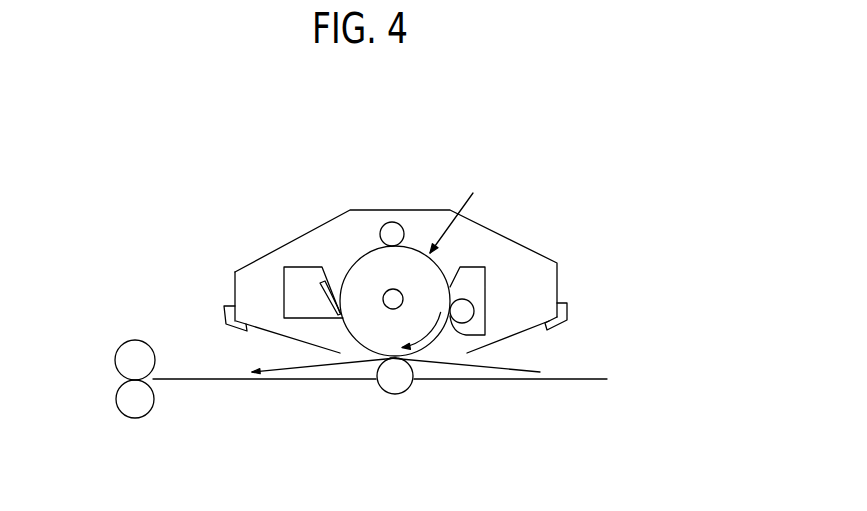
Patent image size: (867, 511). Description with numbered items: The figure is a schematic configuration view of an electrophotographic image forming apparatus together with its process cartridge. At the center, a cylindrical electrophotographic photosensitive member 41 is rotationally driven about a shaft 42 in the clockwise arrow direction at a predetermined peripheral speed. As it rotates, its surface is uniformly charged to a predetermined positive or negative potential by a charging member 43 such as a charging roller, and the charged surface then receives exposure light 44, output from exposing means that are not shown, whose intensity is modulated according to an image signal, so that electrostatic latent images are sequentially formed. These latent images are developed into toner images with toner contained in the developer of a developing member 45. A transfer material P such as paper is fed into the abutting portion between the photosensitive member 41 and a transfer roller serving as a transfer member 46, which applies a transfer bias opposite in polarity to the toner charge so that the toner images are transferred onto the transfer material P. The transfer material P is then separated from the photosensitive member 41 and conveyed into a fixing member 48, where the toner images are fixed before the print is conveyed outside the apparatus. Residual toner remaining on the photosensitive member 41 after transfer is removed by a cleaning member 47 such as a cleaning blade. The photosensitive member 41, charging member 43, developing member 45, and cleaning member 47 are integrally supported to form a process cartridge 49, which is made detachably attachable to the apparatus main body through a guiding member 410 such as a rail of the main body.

The electrophotographic photosensitive member 41 is at (345, 280).
The shaft 42 is at (393, 289).
The charging member 43 is at (392, 222).
The exposure light 44 is at (464, 205).
The developing member 45 is at (472, 265).
The transfer member 46 is at (394, 397).
The cleaning member 47 is at (288, 265).
The fixing member 48 is at (134, 340).
The process cartridge 49 is at (531, 250).
The guiding member 410 is at (224, 311).
The transfer material P is at (511, 368).